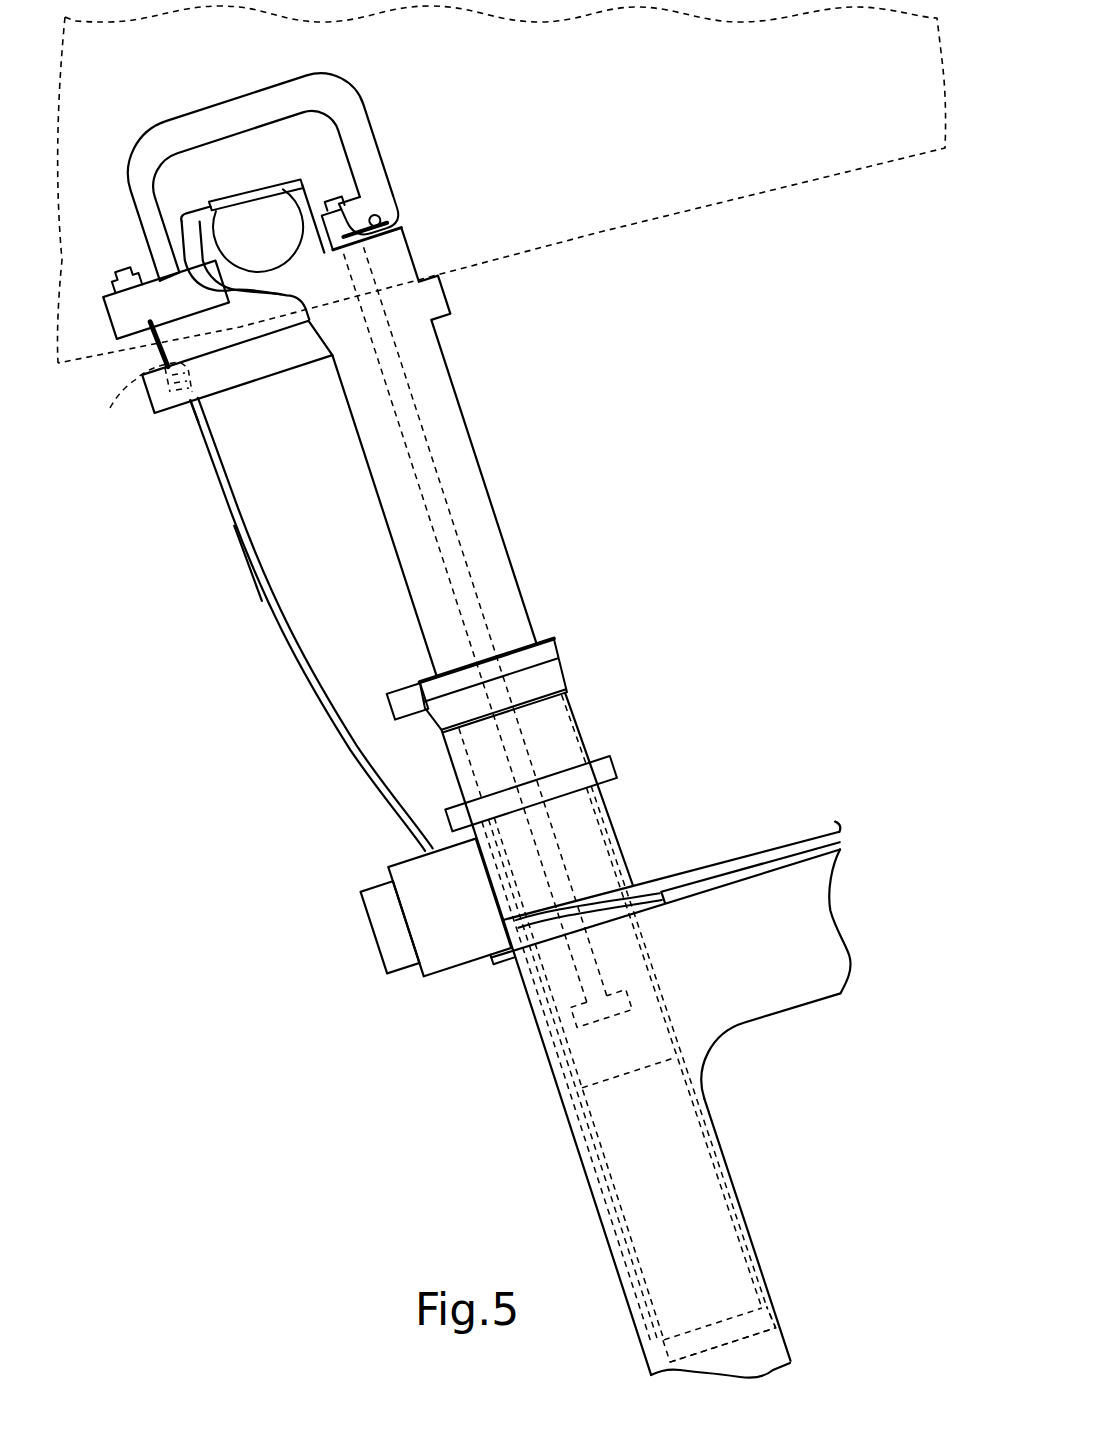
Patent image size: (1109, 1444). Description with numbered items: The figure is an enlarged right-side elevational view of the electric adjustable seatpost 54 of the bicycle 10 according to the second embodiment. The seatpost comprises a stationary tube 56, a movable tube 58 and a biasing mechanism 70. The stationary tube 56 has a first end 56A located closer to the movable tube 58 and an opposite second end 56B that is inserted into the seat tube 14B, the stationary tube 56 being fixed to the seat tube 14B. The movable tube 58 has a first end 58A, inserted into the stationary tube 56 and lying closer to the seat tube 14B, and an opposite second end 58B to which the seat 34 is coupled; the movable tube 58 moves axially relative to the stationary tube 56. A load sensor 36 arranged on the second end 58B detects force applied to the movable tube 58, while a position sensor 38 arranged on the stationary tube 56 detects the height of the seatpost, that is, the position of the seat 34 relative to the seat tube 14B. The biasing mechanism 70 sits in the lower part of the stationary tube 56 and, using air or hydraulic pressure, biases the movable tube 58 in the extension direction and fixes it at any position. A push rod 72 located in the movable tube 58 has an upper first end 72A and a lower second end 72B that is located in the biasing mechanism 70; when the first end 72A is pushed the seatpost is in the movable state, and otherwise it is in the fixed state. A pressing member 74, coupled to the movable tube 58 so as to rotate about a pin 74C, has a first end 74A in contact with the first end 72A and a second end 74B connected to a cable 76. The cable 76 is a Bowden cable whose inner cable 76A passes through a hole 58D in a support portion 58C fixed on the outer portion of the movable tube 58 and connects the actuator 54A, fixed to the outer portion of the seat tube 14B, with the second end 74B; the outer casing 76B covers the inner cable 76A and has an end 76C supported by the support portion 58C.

The bicycle 10 is at (256, 1260).
The seat tube 14B is at (575, 1130).
The seat 34 is at (766, 192).
The load sensor 36 is at (240, 200).
The position sensor 38 is at (412, 715).
The electric adjustable seatpost 54 is at (615, 540).
The actuator 54A is at (455, 965).
The stationary tube 56 is at (580, 722).
The first end of the stationary tube 56A is at (555, 640).
The second end of the stationary tube 56B is at (745, 1340).
The movable tube 58 is at (525, 580).
The first end of the movable tube 58A is at (630, 1088).
The second end of the movable tube 58B is at (240, 262).
The support portion 58C is at (240, 375).
The hole 58D is at (110, 406).
The biasing mechanism 70 is at (698, 1328).
The push rod 72 is at (430, 372).
The first end of the push rod 72A is at (372, 236).
The second end of the push rod 72B is at (600, 1020).
The pressing member 74 is at (170, 132).
The first end of the pressing member 74A is at (352, 217).
The second end of the pressing member 74B is at (118, 325).
The pin 74C is at (383, 221).
The cable 76 is at (290, 628).
The inner cable 76A is at (150, 340).
The outer casing 76B is at (232, 512).
The end of the outer casing 76C is at (190, 410).